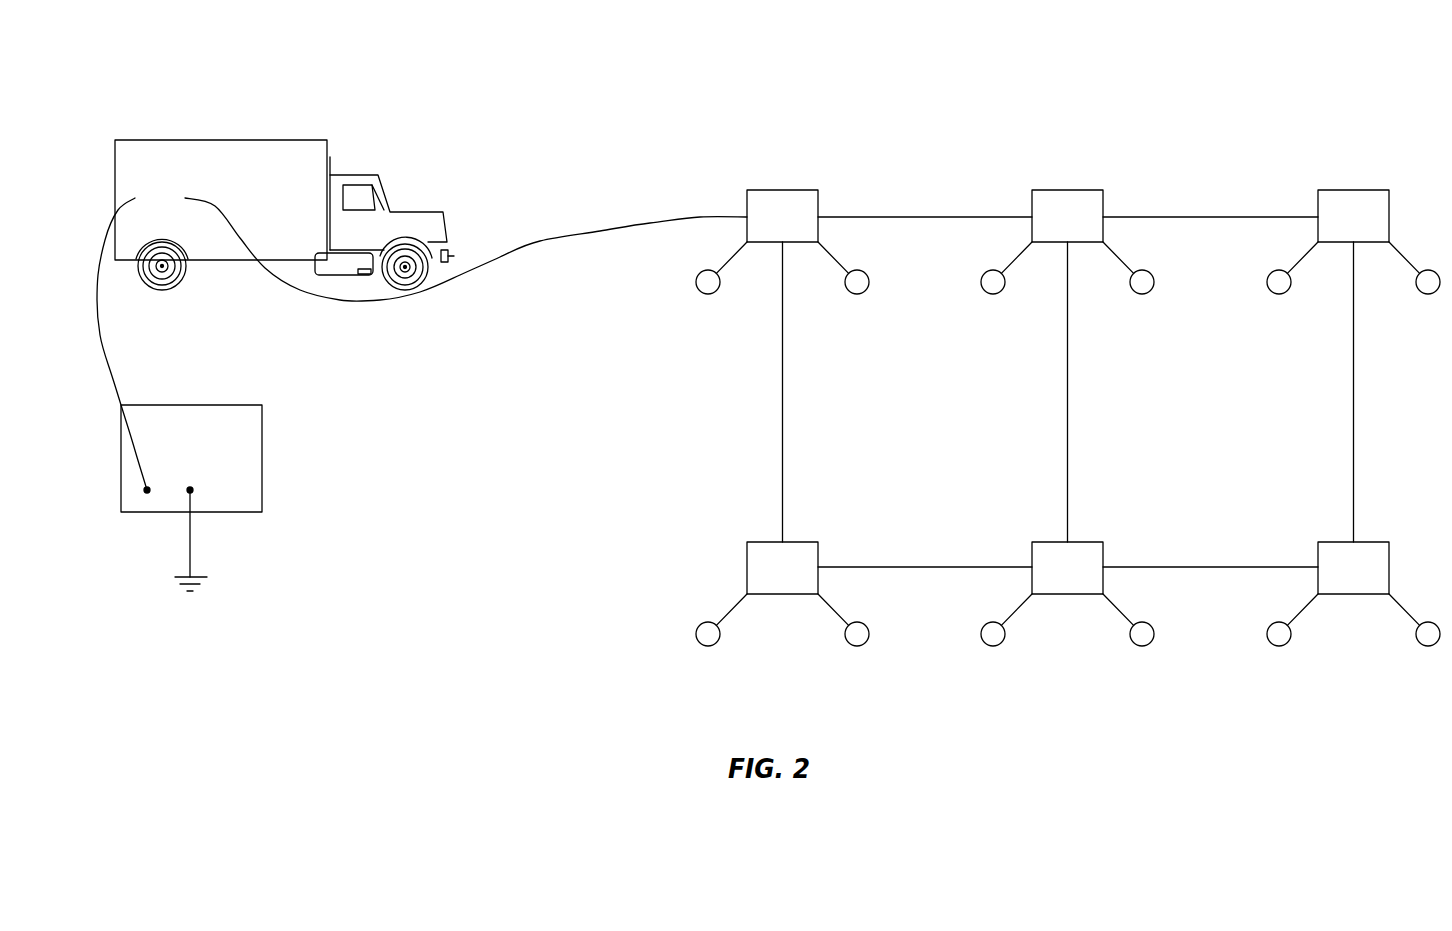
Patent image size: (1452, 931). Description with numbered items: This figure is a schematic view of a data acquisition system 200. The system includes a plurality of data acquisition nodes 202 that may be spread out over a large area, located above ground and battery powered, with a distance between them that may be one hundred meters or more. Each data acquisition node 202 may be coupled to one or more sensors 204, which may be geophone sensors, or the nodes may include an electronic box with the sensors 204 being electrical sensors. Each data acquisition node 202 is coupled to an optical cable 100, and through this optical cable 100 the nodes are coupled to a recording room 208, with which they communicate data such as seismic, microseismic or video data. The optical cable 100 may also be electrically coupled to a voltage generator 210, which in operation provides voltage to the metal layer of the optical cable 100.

The optical cable 100 is at (622, 225).
The data acquisition system 200 is at (768, 373).
The data acquisition node 202 is at (783, 190).
The sensor 204 is at (708, 294).
The recording room 208 is at (218, 140).
The voltage generator 210 is at (190, 405).